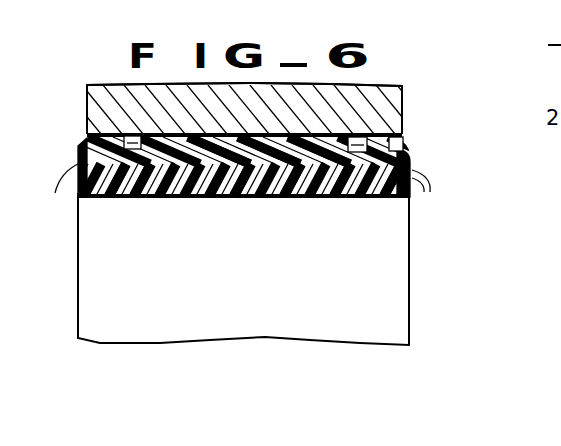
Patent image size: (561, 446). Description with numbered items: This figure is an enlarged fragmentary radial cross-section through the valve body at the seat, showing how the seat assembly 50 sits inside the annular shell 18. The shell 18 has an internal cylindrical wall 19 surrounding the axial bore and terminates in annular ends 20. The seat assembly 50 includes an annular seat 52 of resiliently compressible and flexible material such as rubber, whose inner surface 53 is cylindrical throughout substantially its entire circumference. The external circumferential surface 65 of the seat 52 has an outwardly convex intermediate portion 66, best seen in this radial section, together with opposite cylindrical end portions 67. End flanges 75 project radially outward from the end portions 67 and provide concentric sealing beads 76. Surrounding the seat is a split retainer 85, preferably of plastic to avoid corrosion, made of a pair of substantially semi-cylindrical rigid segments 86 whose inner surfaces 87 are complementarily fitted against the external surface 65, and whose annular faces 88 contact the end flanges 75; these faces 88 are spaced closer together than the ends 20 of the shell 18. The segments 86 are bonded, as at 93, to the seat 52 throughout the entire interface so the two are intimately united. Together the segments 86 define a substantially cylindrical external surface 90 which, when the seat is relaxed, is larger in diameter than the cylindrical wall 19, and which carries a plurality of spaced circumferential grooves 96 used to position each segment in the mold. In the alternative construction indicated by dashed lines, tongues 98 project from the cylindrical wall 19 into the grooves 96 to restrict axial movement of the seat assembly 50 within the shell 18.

The annular shell 18 is at (402, 88).
The internal cylindrical wall 19 is at (222, 166).
The annular ends 20 is at (87, 113).
The seat assembly 50 is at (420, 165).
The annular seat 52 is at (416, 264).
The inner surface 53 is at (410, 203).
The external circumferential surface 65 is at (338, 150).
The outwardly convex intermediate portion 66 is at (272, 157).
The cylindrical end portions 67 is at (118, 190).
The end flanges 75 is at (87, 138).
The sealing beads 76 is at (82, 165).
The split retainer 85 is at (192, 165).
The retainer segments 86 is at (323, 160).
The inner surfaces 87 is at (292, 163).
The annular faces 88 is at (84, 198).
The external surface 90 is at (145, 145).
The bond 93 is at (247, 175).
The grooves 96 is at (128, 135).
The tongues 98 is at (147, 178).